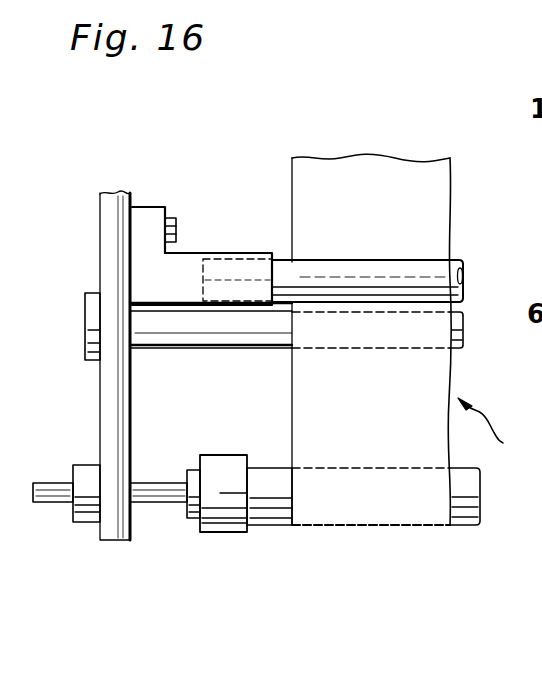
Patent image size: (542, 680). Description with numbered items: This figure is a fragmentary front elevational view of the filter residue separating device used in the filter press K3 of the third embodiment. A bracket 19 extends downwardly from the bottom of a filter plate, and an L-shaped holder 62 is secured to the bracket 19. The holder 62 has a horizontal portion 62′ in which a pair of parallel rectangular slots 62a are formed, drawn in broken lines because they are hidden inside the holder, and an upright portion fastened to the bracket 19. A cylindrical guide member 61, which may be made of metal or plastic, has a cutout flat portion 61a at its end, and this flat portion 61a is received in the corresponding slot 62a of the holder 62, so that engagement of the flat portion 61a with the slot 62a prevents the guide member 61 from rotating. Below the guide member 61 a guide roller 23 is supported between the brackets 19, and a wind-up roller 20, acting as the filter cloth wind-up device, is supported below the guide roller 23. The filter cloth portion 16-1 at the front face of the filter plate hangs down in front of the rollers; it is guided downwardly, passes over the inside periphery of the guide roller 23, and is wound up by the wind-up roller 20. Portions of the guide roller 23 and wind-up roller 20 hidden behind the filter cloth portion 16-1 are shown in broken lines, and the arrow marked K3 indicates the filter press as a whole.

The bracket 19 is at (107, 208).
The L-shaped holder 62 is at (153, 262).
The horizontal portion 62′ is at (190, 290).
The rectangular slot 62a is at (207, 402).
The cutout flat portion 61a is at (230, 355).
The filter cloth portion 16-1 is at (423, 187).
The cylindrical guide member 61 is at (445, 280).
The guide roller 23 is at (258, 337).
The wind-up roller 20 is at (270, 512).
The filter press K3 is at (500, 434).